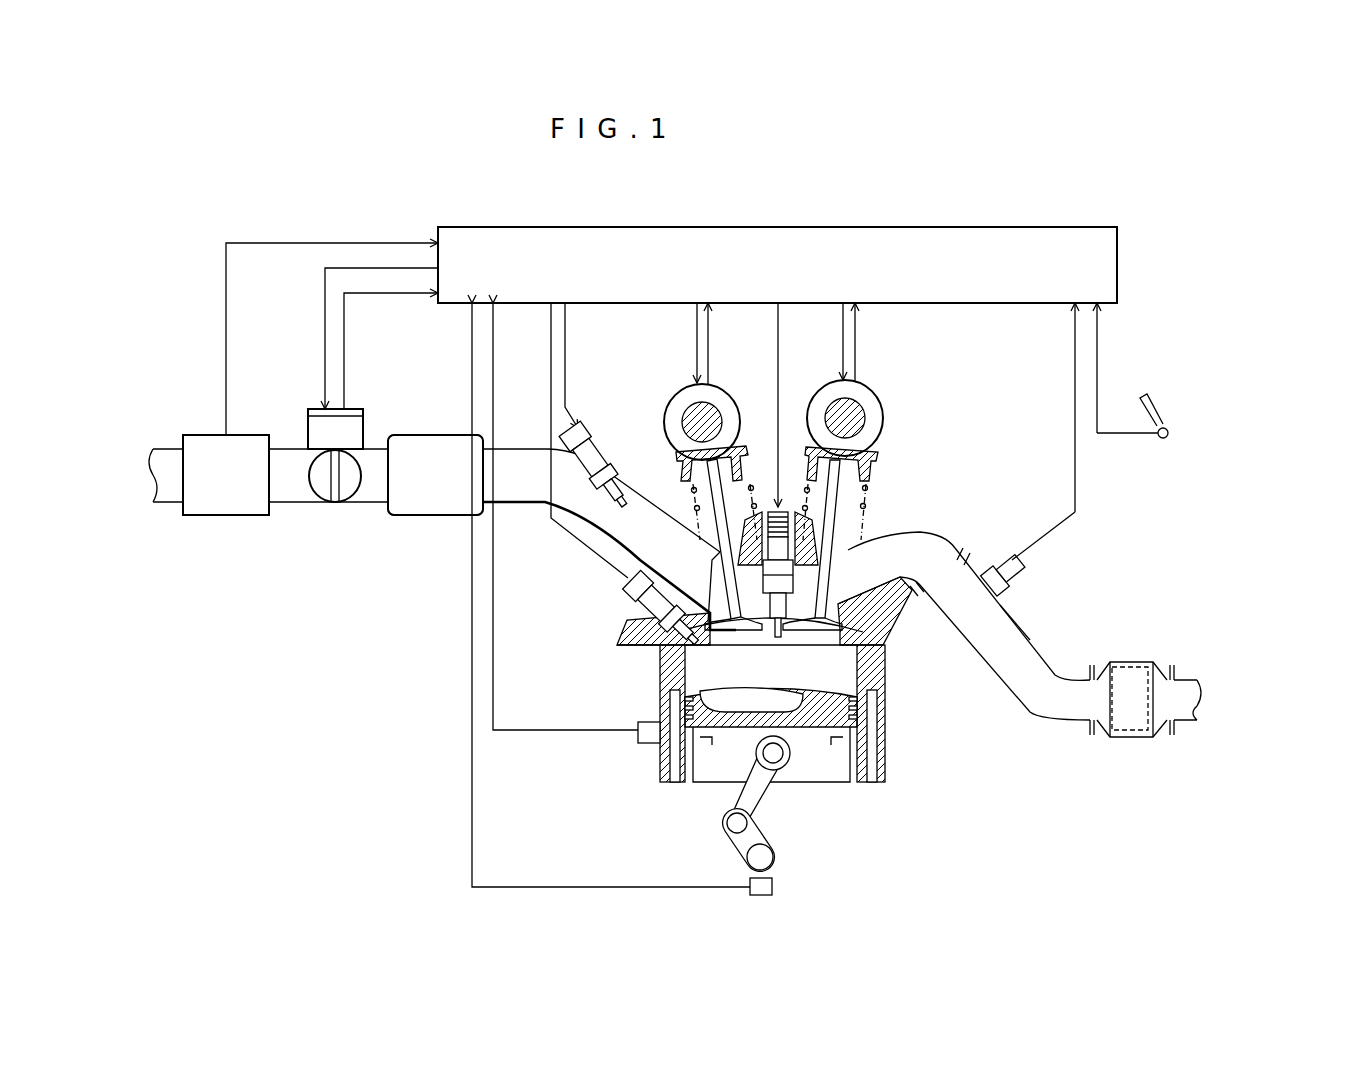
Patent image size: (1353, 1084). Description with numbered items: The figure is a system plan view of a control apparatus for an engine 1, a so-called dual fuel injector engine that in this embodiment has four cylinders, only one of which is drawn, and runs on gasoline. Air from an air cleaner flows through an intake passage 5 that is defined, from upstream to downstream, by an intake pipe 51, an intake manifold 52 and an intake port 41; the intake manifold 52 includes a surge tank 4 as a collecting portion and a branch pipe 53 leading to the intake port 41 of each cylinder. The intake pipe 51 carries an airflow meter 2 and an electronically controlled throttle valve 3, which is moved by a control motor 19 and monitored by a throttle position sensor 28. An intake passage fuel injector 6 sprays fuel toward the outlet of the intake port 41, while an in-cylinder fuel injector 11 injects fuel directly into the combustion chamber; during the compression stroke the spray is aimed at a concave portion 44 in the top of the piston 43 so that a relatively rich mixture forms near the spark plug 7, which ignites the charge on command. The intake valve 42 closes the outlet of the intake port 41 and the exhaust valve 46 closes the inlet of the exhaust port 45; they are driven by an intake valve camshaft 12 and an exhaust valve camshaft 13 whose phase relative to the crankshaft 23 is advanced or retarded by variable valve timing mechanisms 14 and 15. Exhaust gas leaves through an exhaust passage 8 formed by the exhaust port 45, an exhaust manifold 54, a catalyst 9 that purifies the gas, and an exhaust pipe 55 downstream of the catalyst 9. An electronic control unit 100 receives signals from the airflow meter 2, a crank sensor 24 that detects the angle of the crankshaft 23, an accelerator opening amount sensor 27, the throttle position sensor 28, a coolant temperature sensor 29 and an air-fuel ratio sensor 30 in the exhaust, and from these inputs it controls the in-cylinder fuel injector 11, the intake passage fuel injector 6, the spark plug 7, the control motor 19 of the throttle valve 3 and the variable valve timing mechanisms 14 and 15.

The engine 1 is at (945, 790).
The airflow meter 2 is at (208, 450).
The electronically controlled throttle valve 3 is at (367, 462).
The surge tank 4 is at (403, 518).
The intake passage 5 is at (513, 473).
The intake passage fuel injector 6 is at (600, 443).
The spark plug 7 is at (788, 535).
The exhaust passage 8 is at (937, 555).
The catalyst 9 is at (1123, 662).
The in-cylinder fuel injector 11 is at (627, 612).
The intake valve camshaft 12 is at (685, 400).
The exhaust valve camshaft 13 is at (878, 400).
The variable valve timing mechanism 14 is at (720, 393).
The variable valve timing mechanism 15 is at (830, 390).
The control motor 19 is at (313, 432).
The throttle position sensor 28 is at (335, 429).
The crankshaft 23 is at (767, 855).
The crank sensor 24 is at (772, 893).
The accelerator opening amount sensor 27 is at (1155, 440).
The coolant temperature sensor 29 is at (642, 742).
The air-fuel ratio sensor 30 is at (997, 565).
The intake port 41 is at (630, 580).
The intake valve 42 is at (733, 624).
The piston 43 is at (855, 700).
The concave portion 44 is at (780, 693).
The exhaust port 45 is at (880, 588).
The exhaust valve 46 is at (813, 624).
The intake pipe 51 is at (288, 503).
The intake manifold 52 is at (427, 522).
The branch pipe 53 is at (528, 503).
The exhaust manifold 54 is at (988, 672).
The exhaust pipe 55 is at (1188, 675).
The electronic control unit 100 is at (803, 227).